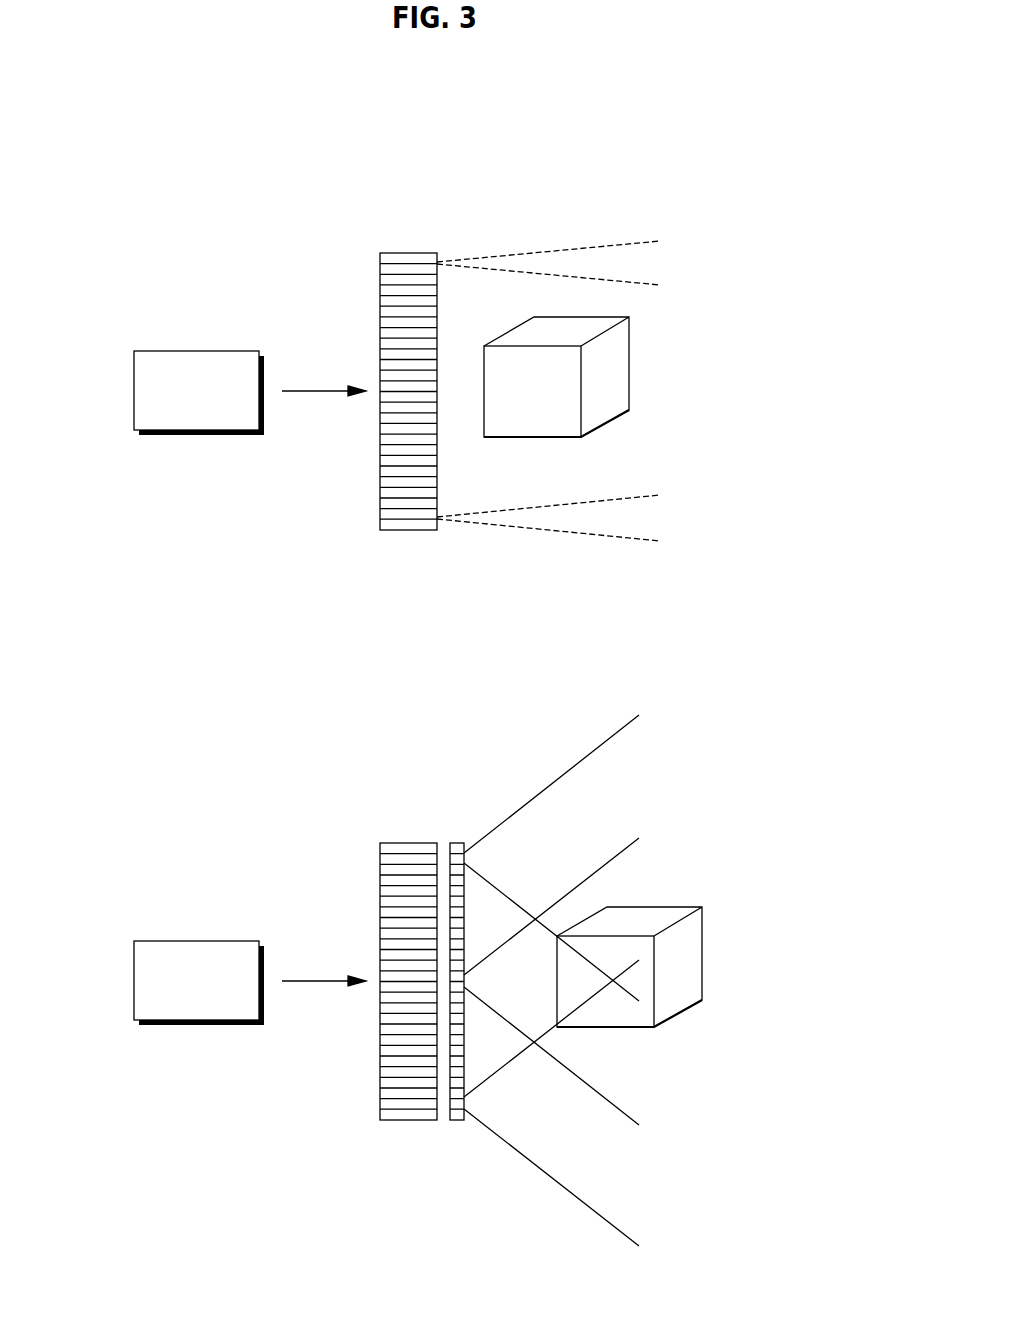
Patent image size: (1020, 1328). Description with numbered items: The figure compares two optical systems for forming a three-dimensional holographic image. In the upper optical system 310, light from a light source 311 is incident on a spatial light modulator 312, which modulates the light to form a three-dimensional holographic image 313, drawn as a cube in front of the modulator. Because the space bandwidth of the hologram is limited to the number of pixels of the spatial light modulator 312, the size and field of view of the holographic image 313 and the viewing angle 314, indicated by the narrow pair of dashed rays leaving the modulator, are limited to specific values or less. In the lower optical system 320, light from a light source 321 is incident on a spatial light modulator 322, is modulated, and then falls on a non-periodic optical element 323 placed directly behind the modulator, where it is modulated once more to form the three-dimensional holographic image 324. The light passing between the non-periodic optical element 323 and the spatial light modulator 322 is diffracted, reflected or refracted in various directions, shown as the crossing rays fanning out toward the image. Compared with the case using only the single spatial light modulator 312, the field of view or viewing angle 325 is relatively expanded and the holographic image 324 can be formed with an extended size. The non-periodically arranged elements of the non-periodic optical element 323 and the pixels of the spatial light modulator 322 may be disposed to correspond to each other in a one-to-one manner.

The optical system 310 is at (377, 98).
The light source 311 is at (134, 390).
The spatial light modulator 312 is at (408, 253).
The 3D holographic image 313 is at (629, 362).
The viewing angle 314 is at (621, 387).
The optical system 320 is at (397, 638).
The light source 321 is at (134, 980).
The spatial light modulator 322 is at (408, 843).
The non-periodic optical element 323 is at (457, 843).
The 3D holographic image 324 is at (702, 952).
The field of view (viewing angle) 325 is at (625, 980).